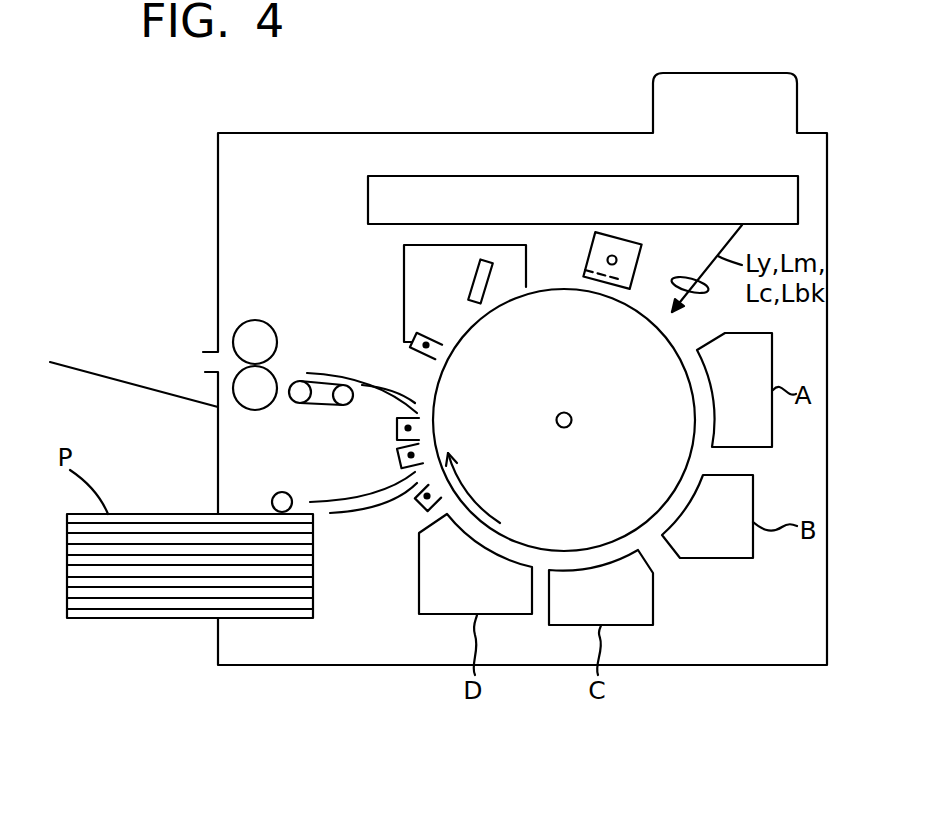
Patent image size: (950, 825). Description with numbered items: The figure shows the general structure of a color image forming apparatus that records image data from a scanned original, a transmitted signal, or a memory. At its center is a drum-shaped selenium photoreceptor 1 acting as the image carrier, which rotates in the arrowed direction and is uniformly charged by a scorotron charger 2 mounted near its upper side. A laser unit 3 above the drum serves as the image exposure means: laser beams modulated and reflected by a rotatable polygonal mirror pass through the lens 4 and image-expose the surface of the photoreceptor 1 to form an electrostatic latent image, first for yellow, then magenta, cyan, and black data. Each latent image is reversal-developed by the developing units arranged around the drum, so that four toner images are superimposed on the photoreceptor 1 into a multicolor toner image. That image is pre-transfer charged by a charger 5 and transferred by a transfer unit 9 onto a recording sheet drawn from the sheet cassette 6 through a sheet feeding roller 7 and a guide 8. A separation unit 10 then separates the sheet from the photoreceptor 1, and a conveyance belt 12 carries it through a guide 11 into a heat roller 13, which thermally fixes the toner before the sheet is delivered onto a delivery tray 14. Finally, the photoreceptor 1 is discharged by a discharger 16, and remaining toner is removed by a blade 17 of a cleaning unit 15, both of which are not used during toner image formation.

The photoreceptor 1 is at (624, 290).
The scorotron charger 2 is at (617, 236).
The laser unit 3 is at (527, 175).
The lens 4 is at (705, 289).
The charger 5 is at (418, 508).
The paper cassette 6 is at (130, 620).
The sheet feeding roller 7 is at (272, 500).
The guide 8 is at (346, 514).
The transfer unit 9 is at (400, 455).
The separation unit 10 is at (397, 428).
The guide 11 is at (333, 373).
The conveyance belt 12 is at (311, 404).
The heat roller 13 is at (233, 329).
The delivery tray 14 is at (93, 373).
The cleaning unit 15 is at (401, 268).
The discharger 16 is at (429, 333).
The blade 17 is at (470, 279).